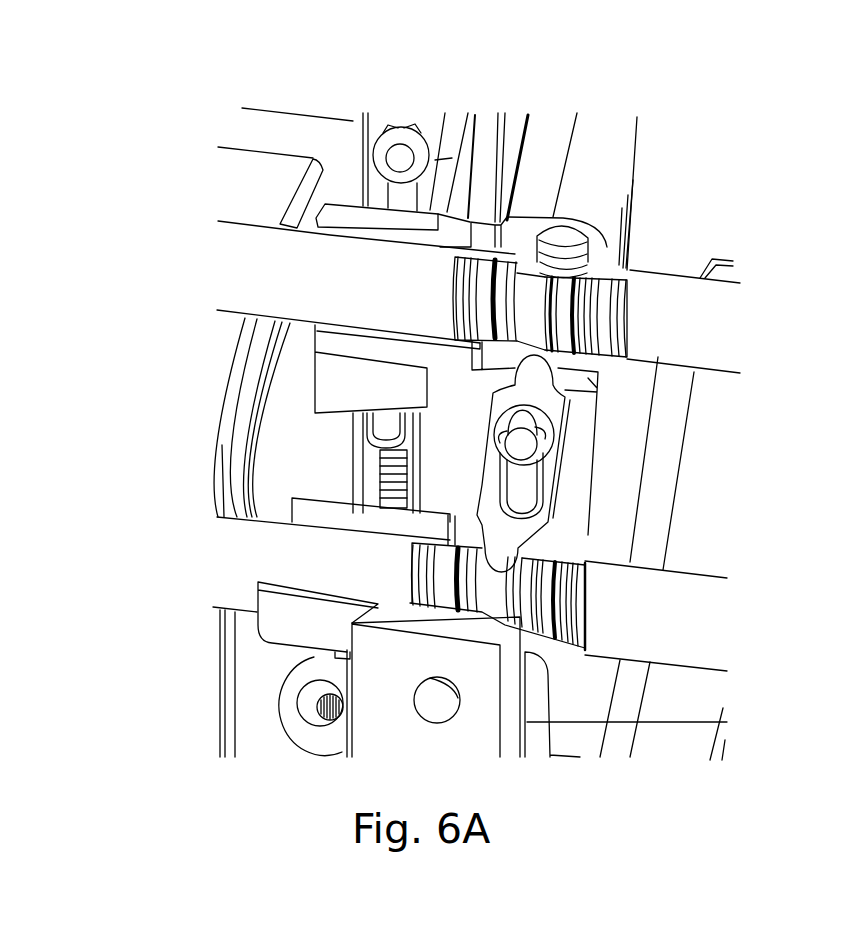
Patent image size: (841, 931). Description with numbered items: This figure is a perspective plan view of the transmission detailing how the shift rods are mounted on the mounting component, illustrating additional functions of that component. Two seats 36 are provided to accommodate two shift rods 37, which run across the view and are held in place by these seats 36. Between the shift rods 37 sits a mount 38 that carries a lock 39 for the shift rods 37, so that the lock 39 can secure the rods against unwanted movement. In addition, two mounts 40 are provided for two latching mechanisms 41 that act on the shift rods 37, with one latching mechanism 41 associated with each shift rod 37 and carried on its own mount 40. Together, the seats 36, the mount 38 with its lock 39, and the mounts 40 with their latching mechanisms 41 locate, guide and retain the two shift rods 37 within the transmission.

The seat 36 is at (363, 343).
The shift rod 37 is at (268, 275).
The mount 38 is at (551, 472).
The lock 39 is at (515, 442).
The mount 40 is at (590, 178).
The latching mechanism 41 is at (557, 268).